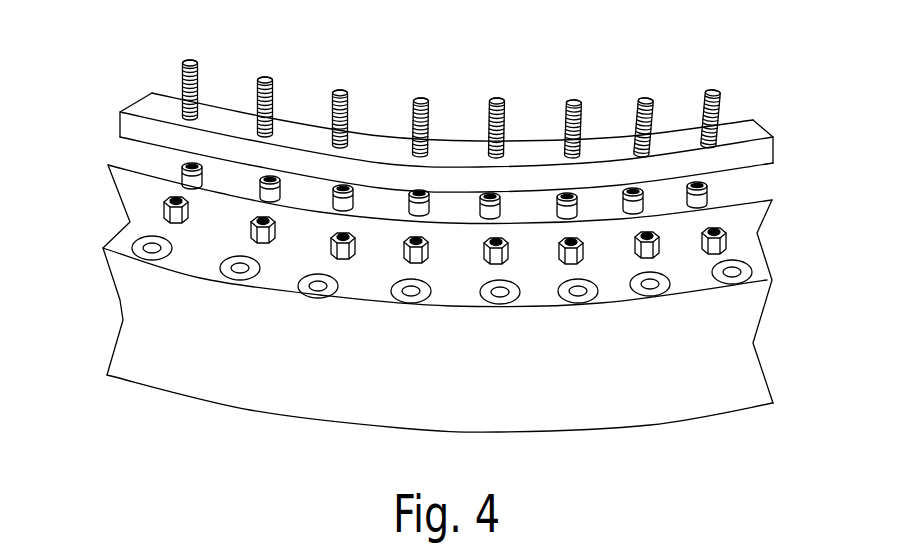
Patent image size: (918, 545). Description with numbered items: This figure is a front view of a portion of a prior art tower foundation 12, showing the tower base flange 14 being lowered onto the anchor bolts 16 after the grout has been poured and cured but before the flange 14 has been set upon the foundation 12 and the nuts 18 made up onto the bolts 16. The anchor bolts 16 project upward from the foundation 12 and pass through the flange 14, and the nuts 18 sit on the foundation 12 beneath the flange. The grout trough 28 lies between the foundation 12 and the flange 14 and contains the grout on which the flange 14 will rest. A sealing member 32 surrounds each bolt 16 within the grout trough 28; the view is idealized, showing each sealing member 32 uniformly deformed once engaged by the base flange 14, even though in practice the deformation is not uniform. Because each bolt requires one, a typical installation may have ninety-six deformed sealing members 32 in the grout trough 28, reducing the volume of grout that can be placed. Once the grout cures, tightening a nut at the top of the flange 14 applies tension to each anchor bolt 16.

The foundation 12 is at (702, 377).
The base flange 14 is at (772, 150).
The anchor bolts 16 is at (198, 70).
The nuts 18 is at (163, 212).
The grout trough 28 is at (743, 193).
The sealing member 32 is at (182, 165).